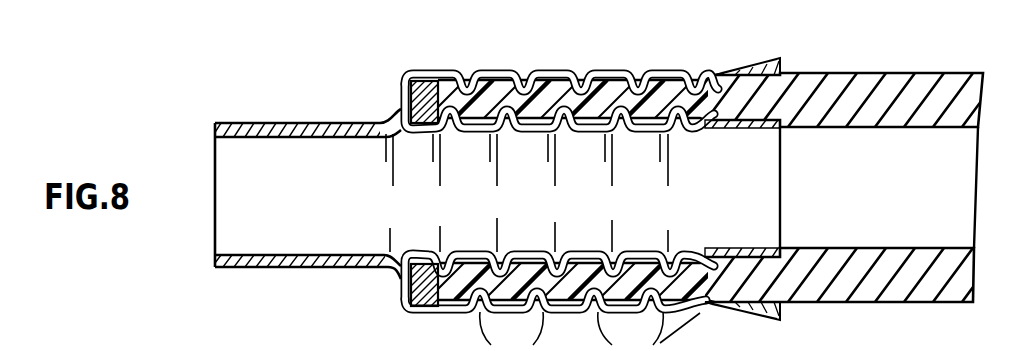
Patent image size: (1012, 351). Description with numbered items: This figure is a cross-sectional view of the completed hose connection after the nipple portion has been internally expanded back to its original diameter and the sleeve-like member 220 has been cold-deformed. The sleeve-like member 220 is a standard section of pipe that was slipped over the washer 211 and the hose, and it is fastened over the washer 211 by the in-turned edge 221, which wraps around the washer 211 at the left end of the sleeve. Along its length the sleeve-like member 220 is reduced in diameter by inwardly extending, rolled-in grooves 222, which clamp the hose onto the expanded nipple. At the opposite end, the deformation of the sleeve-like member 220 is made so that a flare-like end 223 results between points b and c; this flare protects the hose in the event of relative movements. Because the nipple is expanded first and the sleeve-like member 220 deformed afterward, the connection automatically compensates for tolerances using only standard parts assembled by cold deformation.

The washer 211 is at (419, 81).
The sleeve-like member 220 is at (577, 61).
The in-turned edge 221 is at (399, 93).
The rolled-in grooves 222 is at (590, 331).
The flare-like end 223 is at (770, 58).
The point b is at (716, 69).
The point c is at (781, 58).